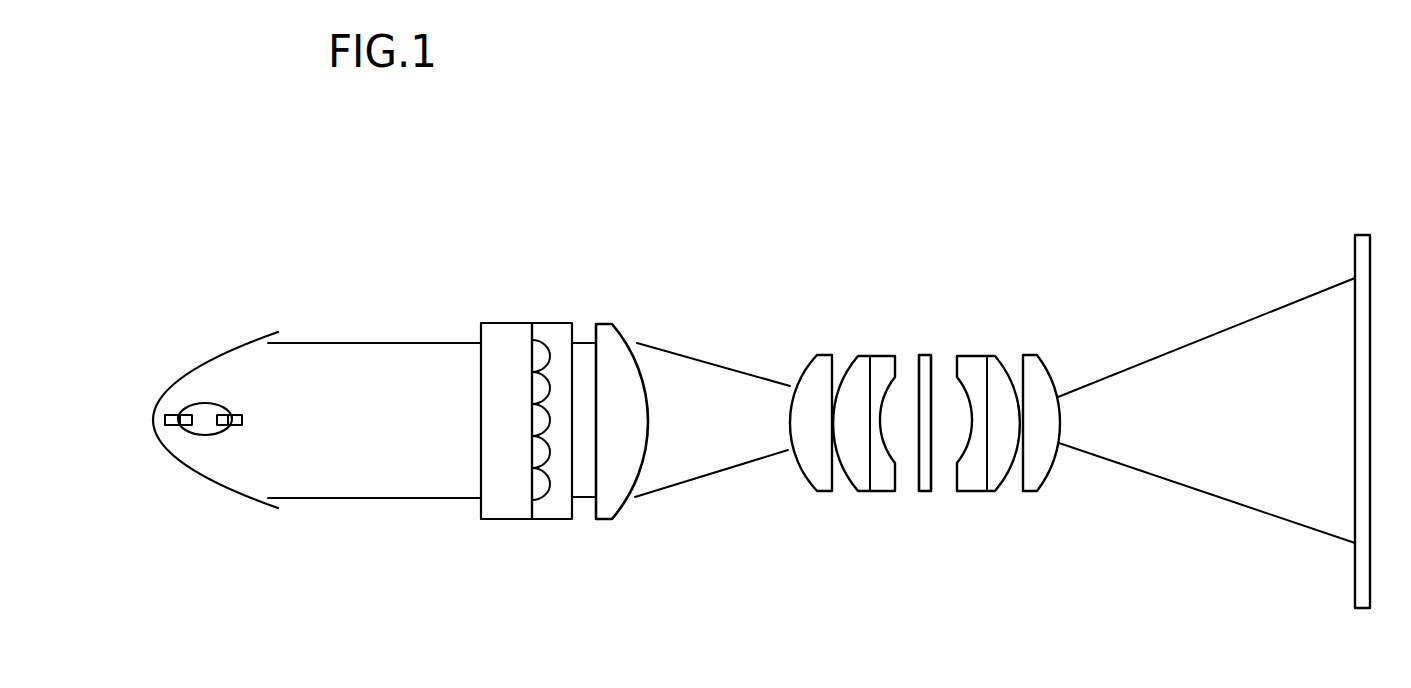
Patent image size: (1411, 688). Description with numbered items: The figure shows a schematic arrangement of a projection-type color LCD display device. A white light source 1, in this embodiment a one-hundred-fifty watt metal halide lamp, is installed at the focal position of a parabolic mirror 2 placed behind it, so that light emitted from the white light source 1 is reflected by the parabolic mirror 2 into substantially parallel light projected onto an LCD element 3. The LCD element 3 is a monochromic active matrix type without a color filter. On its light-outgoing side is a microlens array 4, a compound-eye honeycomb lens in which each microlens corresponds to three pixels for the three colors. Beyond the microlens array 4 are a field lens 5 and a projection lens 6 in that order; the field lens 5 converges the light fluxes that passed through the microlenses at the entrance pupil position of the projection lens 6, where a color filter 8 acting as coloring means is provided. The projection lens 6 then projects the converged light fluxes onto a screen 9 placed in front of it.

The white light source 1 is at (213, 434).
The parabolic mirror 2 is at (250, 334).
The LCD element 3 is at (480, 323).
The microlens array 4 is at (558, 322).
The field lens 5 is at (608, 322).
The projection lens 6 is at (1048, 344).
The color filter 8 is at (922, 493).
The screen 9 is at (1370, 343).